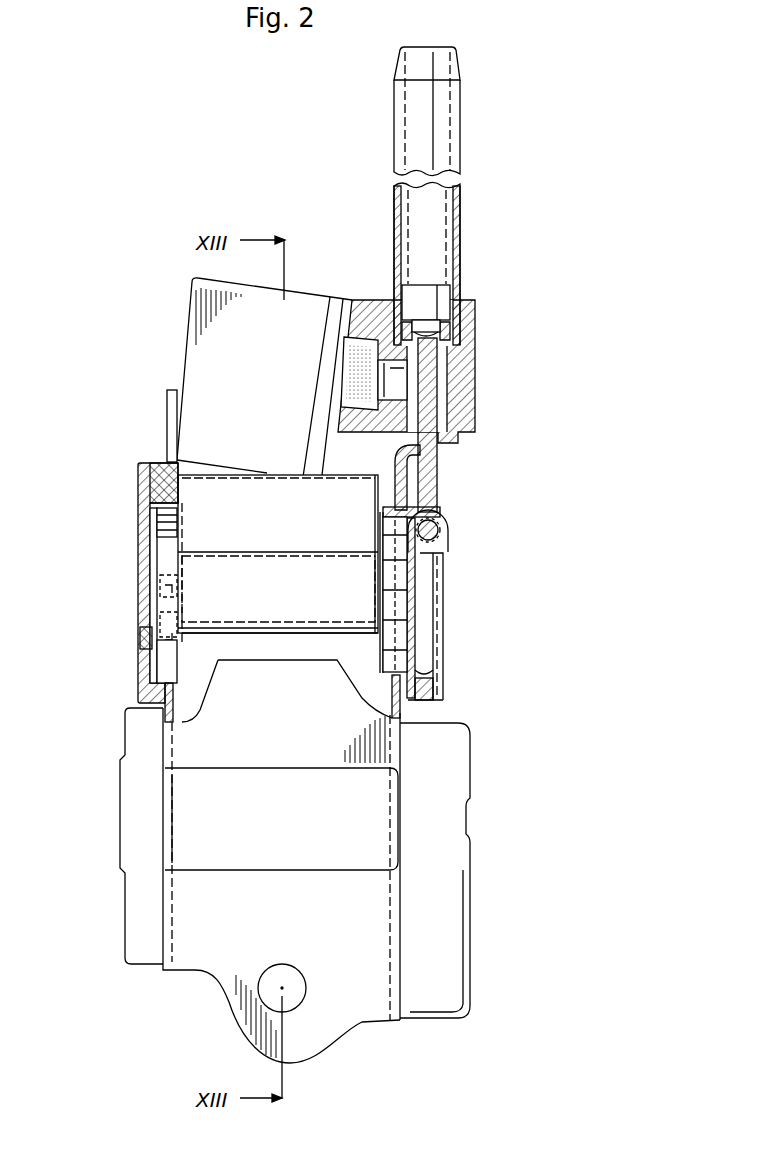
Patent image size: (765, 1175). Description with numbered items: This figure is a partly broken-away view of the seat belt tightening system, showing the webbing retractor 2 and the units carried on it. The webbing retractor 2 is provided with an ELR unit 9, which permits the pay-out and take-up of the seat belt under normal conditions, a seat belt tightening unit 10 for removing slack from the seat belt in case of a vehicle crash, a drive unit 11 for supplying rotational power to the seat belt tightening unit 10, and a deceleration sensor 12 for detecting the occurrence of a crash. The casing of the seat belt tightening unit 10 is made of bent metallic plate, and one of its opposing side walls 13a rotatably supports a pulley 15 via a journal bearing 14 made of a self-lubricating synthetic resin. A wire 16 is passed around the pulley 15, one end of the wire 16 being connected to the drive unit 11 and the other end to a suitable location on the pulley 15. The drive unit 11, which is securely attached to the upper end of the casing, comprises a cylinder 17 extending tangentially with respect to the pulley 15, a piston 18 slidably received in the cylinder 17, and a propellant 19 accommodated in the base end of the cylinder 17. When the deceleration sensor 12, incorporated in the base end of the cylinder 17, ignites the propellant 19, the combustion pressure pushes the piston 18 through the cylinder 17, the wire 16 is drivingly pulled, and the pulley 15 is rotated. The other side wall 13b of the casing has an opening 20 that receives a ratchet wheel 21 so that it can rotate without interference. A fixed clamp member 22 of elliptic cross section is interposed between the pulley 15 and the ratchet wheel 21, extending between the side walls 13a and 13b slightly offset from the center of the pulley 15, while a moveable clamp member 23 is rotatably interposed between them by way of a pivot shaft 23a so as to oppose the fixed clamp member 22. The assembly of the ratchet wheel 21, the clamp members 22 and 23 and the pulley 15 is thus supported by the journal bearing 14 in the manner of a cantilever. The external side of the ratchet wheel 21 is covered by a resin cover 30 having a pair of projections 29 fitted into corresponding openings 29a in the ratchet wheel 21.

The webbing retractor 2 is at (530, 475).
The ELR unit 9 is at (471, 822).
The seat belt tightening unit 10 is at (450, 569).
The drive unit 11 is at (476, 366).
The deceleration sensor 12 is at (184, 361).
The side wall 13a is at (407, 485).
The other side wall 13b is at (168, 460).
The journal bearing 14 is at (412, 514).
The pulley 15 is at (425, 618).
The wire 16 is at (426, 702).
The cylinder 17 is at (456, 240).
The piston 18 is at (452, 300).
The propellant 19 is at (362, 336).
The opening 20 is at (178, 690).
The ratchet wheel 21 is at (158, 668).
The fixed clamp member 22 is at (278, 634).
The moveable clamp member 23 is at (287, 474).
The pivot shaft 23a is at (400, 578).
The projections 29 is at (162, 626).
The openings 29a is at (166, 588).
The resin cover 30 is at (150, 570).